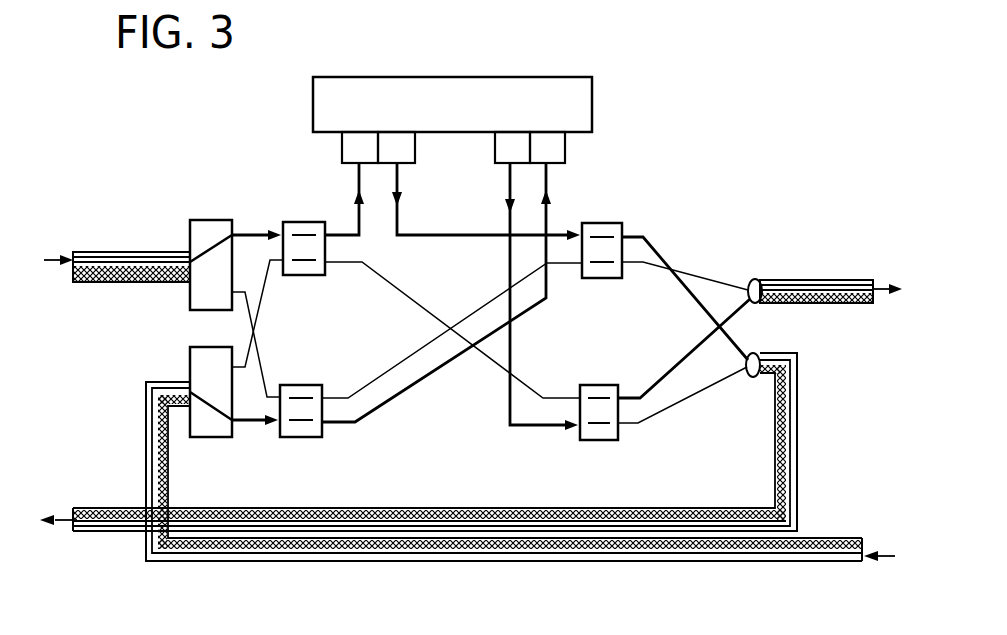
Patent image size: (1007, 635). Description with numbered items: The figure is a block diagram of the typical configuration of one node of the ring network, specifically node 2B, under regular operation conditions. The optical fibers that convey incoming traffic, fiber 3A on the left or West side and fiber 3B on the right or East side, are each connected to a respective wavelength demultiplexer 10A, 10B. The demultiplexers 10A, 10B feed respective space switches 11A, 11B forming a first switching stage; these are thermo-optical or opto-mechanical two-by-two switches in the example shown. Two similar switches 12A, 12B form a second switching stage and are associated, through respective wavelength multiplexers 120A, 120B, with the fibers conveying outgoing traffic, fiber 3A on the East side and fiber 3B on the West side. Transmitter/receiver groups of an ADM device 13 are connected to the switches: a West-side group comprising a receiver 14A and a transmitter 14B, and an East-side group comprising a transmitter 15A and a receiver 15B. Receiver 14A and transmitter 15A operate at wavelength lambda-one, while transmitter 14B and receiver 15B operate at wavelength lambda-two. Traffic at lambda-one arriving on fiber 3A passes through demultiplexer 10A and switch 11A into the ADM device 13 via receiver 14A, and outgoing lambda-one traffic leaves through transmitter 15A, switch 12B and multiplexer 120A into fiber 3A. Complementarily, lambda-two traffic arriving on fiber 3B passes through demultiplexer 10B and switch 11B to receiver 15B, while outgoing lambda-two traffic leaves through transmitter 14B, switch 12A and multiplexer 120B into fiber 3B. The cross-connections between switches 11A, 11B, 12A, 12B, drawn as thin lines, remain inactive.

The node 2B is at (735, 190).
The optical fiber 3A is at (115, 252).
The optical fiber 3B is at (102, 505).
The wavelength demultiplexer 10A is at (200, 232).
The wavelength demultiplexer 10B is at (218, 427).
The space switch 11A is at (292, 223).
The space switch 11B is at (294, 393).
The switch 12A is at (607, 223).
The switch 12B is at (597, 393).
The ADM device 13 is at (582, 69).
The receiver 14A is at (328, 146).
The transmitter 14B is at (402, 132).
The transmitter 15A is at (513, 132).
The receiver 15B is at (610, 129).
The wavelength multiplexer 120A is at (755, 280).
The wavelength multiplexer 120B is at (749, 378).